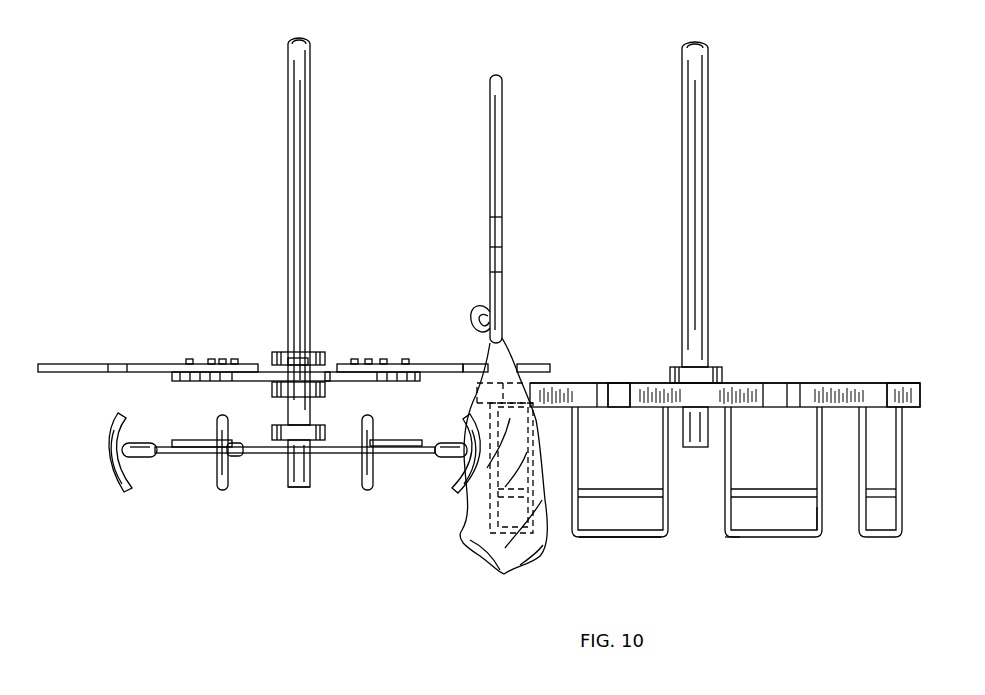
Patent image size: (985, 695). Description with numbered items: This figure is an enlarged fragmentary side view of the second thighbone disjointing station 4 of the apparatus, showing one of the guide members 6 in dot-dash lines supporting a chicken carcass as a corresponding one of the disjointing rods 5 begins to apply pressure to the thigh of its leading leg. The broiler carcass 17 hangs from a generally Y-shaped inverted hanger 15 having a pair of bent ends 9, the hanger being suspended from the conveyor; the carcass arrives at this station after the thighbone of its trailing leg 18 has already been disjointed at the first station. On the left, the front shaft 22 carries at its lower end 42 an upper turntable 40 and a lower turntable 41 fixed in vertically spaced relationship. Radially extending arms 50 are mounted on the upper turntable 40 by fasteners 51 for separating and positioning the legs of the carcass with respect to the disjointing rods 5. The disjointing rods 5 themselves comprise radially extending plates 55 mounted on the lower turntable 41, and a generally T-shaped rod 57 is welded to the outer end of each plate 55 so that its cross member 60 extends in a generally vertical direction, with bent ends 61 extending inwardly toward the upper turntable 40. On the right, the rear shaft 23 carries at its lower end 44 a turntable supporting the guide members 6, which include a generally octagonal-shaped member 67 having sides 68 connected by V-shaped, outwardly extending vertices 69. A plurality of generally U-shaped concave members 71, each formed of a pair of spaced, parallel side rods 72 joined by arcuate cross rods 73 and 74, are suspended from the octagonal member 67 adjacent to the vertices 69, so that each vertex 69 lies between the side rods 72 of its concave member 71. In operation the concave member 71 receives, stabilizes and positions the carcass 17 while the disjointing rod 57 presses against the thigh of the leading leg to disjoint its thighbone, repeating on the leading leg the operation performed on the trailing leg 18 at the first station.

The second thighbone disjointing station 4 is at (395, 558).
The disjointing rods 5 is at (106, 463).
The guide members 6 is at (728, 562).
The bent ends 9 is at (502, 323).
The inverted hanger 15 is at (502, 134).
The broiler carcass 17 is at (521, 566).
The trailing leg 18 is at (515, 357).
The front shaft 22 is at (298, 168).
The rear shaft 23 is at (695, 171).
The upper turntable 40 is at (206, 381).
The lower turntable 41 is at (392, 440).
The lower end of front shaft 42 is at (297, 488).
The lower end of rear shaft 44 is at (693, 432).
The arms 50 is at (77, 371).
The fasteners 51 is at (353, 362).
The plates 55 is at (409, 454).
The T-shaped rod 57 is at (140, 455).
The cross member 60 is at (110, 436).
The bent ends 61 is at (222, 492).
The octagonal-shaped member 67 is at (845, 362).
The sides 68 is at (747, 393).
The vertices 69 is at (619, 396).
The concave member 71 is at (818, 516).
The side rods 72 is at (580, 471).
The cross rod 73 is at (624, 538).
The cross rod 74 is at (770, 490).